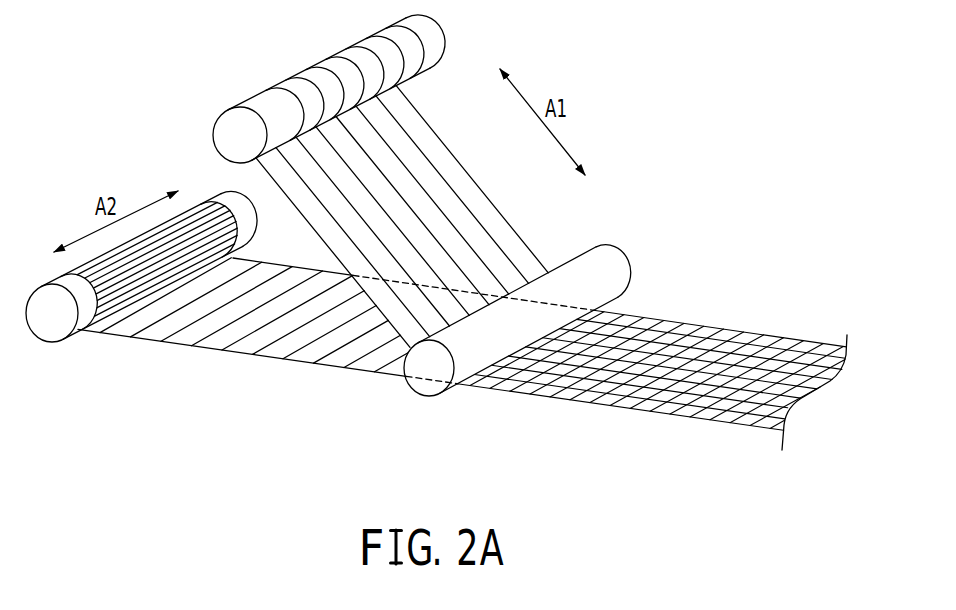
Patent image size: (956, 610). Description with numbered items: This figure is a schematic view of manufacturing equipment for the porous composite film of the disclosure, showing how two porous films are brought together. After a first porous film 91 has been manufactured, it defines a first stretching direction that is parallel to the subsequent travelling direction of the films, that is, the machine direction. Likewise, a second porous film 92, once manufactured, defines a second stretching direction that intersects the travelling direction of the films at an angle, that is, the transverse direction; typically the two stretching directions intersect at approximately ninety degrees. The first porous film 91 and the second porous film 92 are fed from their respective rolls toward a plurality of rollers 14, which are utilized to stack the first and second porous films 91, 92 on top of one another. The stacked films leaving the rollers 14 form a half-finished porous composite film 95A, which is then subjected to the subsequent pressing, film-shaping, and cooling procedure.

The first porous film 91 is at (510, 223).
The second porous film 92 is at (219, 351).
The rollers 14 is at (615, 268).
The half-finished porous composite film 95A is at (777, 338).